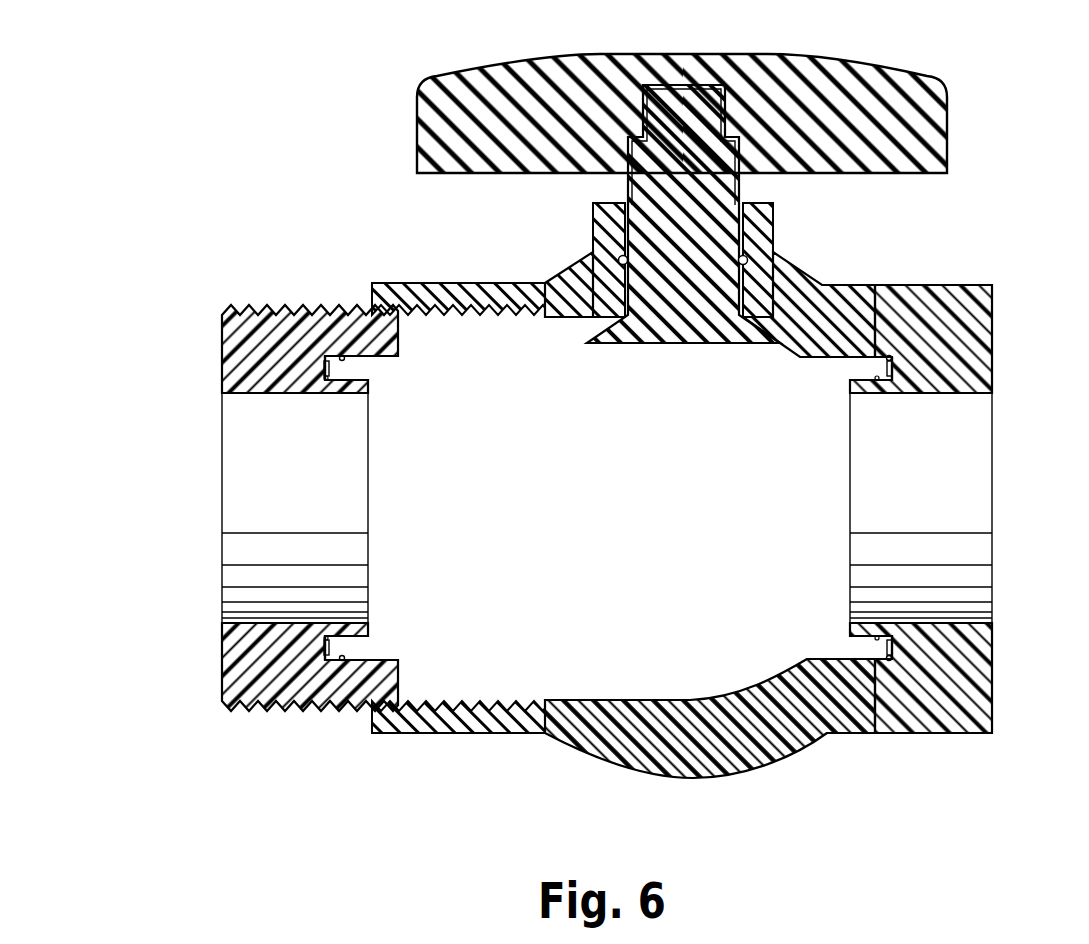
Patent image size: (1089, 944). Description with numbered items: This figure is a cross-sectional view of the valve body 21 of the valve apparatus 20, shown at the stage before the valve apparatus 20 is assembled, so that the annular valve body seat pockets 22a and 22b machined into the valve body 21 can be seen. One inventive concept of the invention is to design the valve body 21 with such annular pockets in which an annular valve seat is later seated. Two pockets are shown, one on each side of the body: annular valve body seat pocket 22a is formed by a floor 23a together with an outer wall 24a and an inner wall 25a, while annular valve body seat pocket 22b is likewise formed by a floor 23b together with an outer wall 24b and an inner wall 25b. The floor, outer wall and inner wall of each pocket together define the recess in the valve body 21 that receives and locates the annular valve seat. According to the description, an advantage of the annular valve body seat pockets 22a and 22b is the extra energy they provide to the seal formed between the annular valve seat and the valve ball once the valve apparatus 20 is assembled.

The valve apparatus 20 is at (257, 116).
The valve body 21 is at (522, 288).
The annular valve body seat pocket 22a is at (345, 367).
The annular valve body seat pocket 22b is at (872, 367).
The floor 23a is at (323, 369).
The floor 23b is at (990, 367).
The outer wall 24a is at (341, 355).
The outer wall 24b is at (889, 355).
The inner wall 25a is at (367, 373).
The inner wall 25b is at (853, 377).